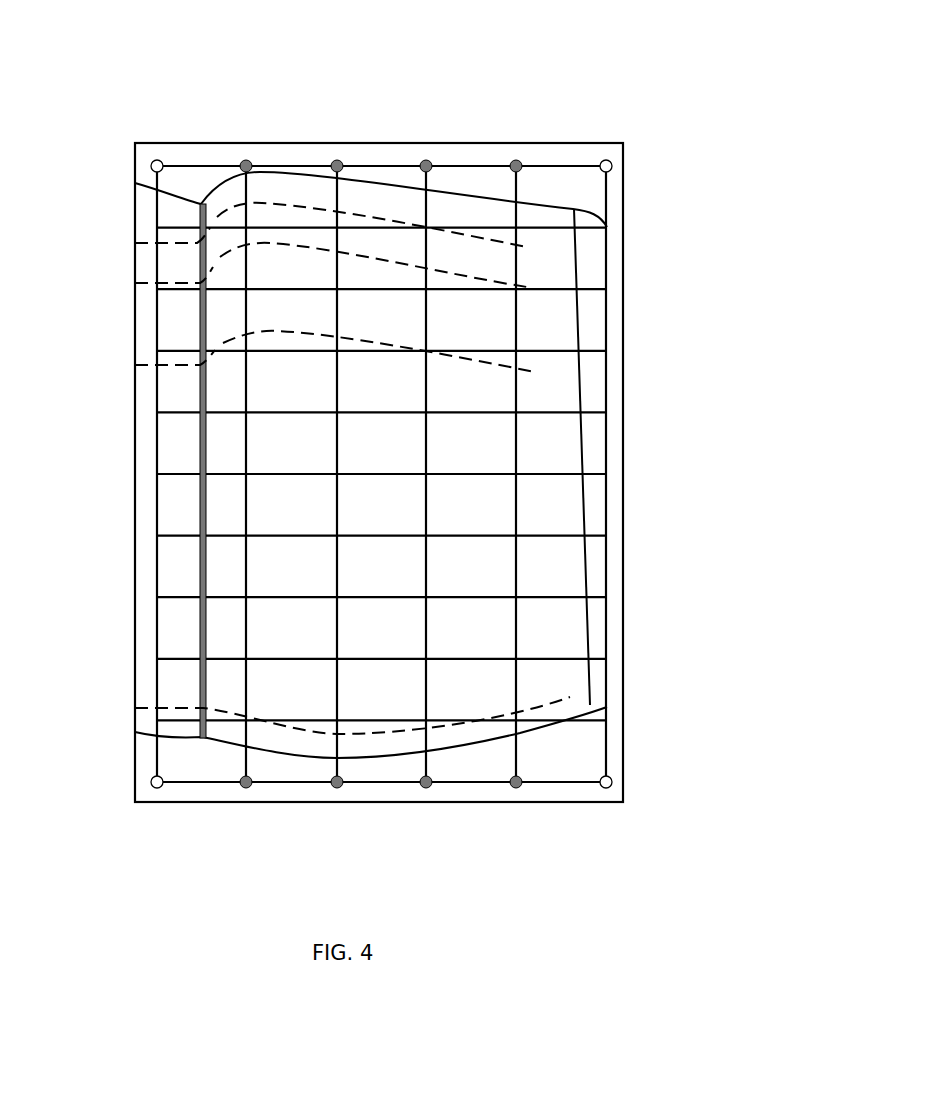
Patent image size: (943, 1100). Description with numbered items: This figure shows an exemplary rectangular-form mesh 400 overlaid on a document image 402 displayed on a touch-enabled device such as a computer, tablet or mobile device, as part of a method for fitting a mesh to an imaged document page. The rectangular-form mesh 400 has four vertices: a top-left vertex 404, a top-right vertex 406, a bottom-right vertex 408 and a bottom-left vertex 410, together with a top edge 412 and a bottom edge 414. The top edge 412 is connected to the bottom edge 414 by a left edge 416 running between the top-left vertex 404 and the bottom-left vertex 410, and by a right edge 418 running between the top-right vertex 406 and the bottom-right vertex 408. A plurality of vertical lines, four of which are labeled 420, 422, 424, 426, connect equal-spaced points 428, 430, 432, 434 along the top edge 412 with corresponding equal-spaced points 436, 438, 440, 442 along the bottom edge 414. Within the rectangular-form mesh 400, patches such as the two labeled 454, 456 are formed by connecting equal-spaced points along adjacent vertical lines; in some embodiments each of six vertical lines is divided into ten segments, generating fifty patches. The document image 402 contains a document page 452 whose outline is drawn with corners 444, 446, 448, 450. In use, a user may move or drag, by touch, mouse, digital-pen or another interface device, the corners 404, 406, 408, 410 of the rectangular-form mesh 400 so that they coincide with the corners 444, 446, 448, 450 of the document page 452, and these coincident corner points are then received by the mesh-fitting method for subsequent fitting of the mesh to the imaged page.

The rectangular-form mesh 400 is at (620, 206).
The document image 402 is at (710, 66).
The top-left vertex 404 is at (156, 160).
The top-right vertex 406 is at (602, 160).
The bottom-right vertex 408 is at (608, 789).
The bottom-left vertex 410 is at (157, 788).
The top edge 412 is at (377, 164).
The bottom edge 414 is at (397, 802).
The left edge 416 is at (157, 508).
The right edge 418 is at (608, 493).
The line 420 is at (247, 638).
The line 422 is at (333, 700).
The line 424 is at (428, 578).
The line 426 is at (518, 637).
The equal-spaced point 428 is at (246, 160).
The equal-spaced point 430 is at (337, 160).
The equal-spaced point 432 is at (426, 160).
The equal-spaced point 434 is at (516, 160).
The equal-spaced point 436 is at (246, 788).
The equal-spaced point 438 is at (337, 788).
The equal-spaced point 440 is at (426, 788).
The equal-spaced point 442 is at (516, 788).
The corner 444 is at (201, 204).
The corner 446 is at (607, 227).
The corner 448 is at (595, 710).
The corner 450 is at (206, 738).
The document page 452 is at (570, 380).
The patch 454 is at (167, 442).
The patch 456 is at (257, 568).